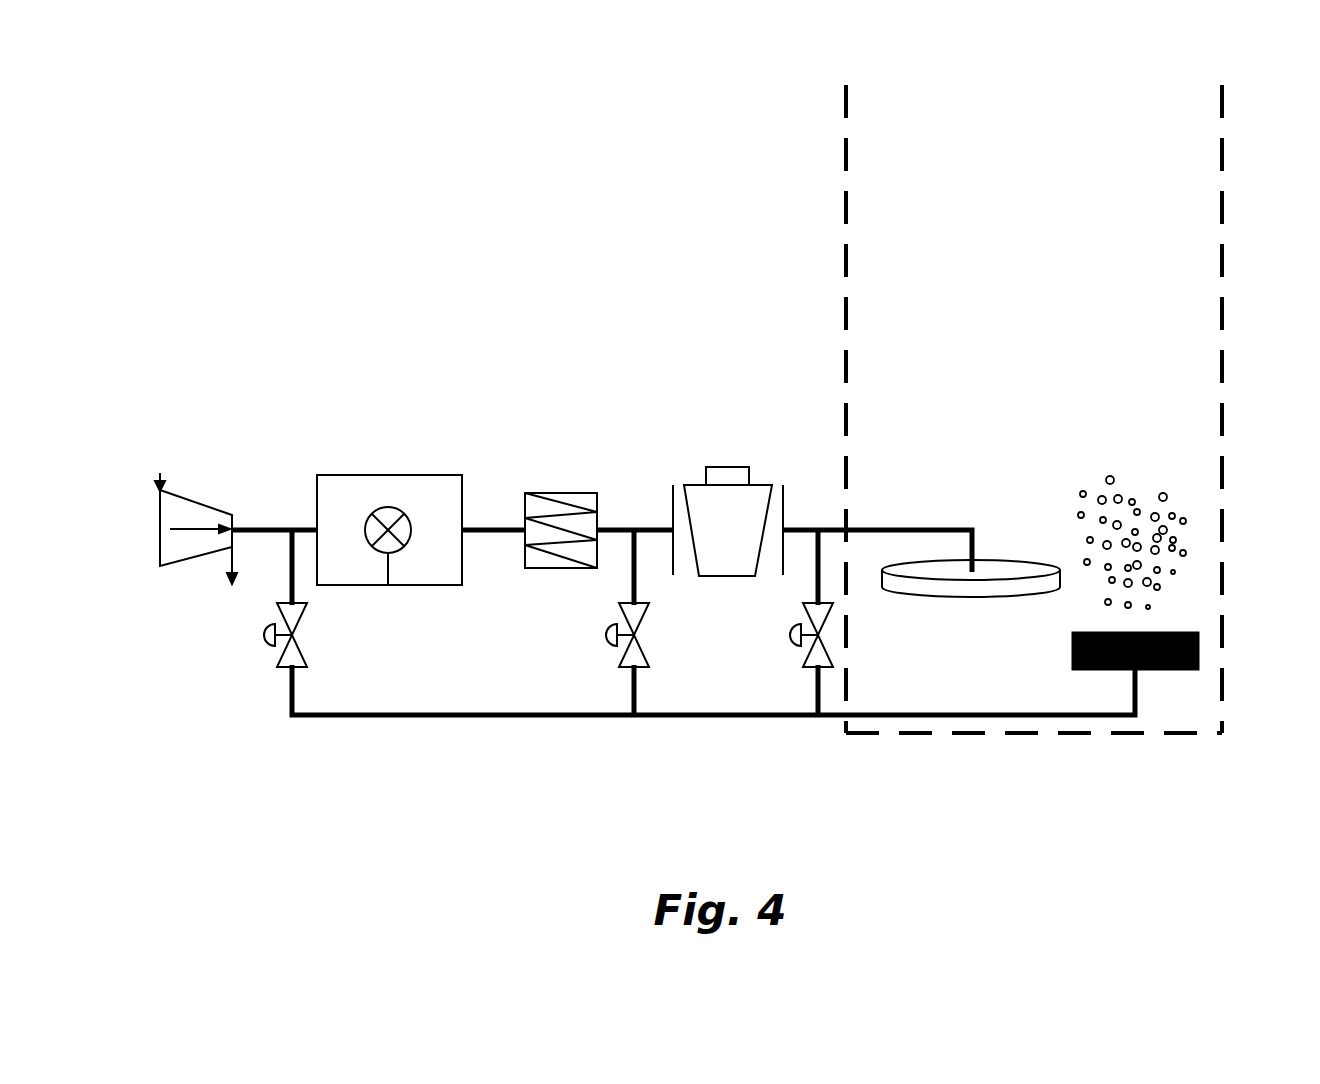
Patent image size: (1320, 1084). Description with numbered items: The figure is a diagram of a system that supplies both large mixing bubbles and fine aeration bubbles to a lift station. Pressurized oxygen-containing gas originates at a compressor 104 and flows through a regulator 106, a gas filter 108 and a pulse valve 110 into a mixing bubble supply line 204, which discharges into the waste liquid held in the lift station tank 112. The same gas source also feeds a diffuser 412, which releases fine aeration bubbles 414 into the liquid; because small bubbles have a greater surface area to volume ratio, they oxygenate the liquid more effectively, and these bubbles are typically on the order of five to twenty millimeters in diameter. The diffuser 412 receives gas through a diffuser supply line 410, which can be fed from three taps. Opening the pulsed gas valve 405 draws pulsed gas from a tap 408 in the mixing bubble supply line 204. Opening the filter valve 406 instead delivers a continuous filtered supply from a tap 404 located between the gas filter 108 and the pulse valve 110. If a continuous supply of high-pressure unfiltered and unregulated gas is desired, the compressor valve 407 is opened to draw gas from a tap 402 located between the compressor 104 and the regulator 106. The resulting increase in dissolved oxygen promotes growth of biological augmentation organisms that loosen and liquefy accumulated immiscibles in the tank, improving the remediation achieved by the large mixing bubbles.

The compressor 104 is at (208, 508).
The regulator 106 is at (423, 475).
The gas filter 108 is at (562, 493).
The pulse valve 110 is at (731, 467).
The lift station tank 112 is at (845, 272).
The mixing bubble supply line 204 is at (867, 528).
The tap 402 is at (290, 532).
The tap 404 is at (636, 528).
The pulsed gas valve 405 is at (803, 608).
The filter valve 406 is at (618, 608).
The compressor valve 407 is at (300, 615).
The tap 408 is at (818, 528).
The diffuser supply line 410 is at (1017, 715).
The diffuser 412 is at (1180, 633).
The fine aeration bubbles 414 is at (1141, 472).